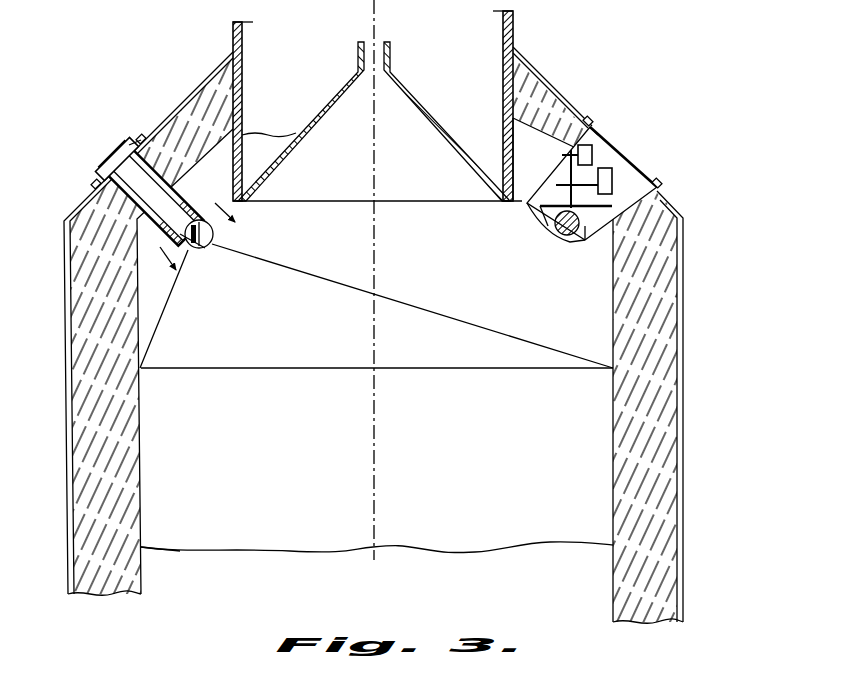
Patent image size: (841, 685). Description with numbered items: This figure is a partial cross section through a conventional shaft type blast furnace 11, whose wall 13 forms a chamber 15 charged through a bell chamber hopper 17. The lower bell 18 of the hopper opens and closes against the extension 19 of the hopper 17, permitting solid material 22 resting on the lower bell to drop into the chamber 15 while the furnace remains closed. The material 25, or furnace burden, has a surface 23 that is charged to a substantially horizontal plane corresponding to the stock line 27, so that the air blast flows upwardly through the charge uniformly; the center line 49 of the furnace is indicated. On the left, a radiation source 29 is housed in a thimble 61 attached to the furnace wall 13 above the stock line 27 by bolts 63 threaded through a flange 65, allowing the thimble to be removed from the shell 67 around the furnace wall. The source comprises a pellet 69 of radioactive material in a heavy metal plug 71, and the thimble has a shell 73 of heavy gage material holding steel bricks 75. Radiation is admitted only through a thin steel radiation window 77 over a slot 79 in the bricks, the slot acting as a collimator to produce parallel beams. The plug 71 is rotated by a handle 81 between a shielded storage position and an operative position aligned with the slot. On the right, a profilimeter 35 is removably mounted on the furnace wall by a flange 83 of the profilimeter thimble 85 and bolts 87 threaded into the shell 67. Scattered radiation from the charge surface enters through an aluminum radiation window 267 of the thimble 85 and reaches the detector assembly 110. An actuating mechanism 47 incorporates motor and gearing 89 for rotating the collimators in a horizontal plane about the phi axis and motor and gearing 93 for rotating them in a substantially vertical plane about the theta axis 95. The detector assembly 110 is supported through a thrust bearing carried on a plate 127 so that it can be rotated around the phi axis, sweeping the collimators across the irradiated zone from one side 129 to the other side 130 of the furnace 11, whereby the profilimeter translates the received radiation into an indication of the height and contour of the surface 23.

The blast furnace 11 is at (378, 335).
The furnace wall 13 is at (370, 335).
The furnace chamber 15 is at (592, 505).
The bell chamber hopper 17 is at (514, 40).
The lower bell 18 is at (430, 112).
The extension 19 is at (514, 184).
The solid material 22 is at (293, 134).
The surface 23 is at (514, 548).
The material 25 is at (240, 540).
The stock line 27 is at (554, 369).
The radiation source 29 is at (137, 198).
The profilimeter 35 is at (605, 185).
The actuating mechanism 47 is at (662, 190).
The central axis 49 is at (375, 466).
The thimble 61 is at (163, 246).
The bolts 63 is at (139, 136).
The flange 65 is at (143, 136).
The shell 67 is at (67, 416).
The pellet 69 is at (184, 240).
The heavy metal plug 71 is at (172, 222).
The shell 73 is at (180, 202).
The steel bricks 75 is at (208, 241).
The radiation window 77 is at (202, 252).
The slot 79 is at (190, 249).
The handle 81 is at (108, 158).
The flange 83 is at (590, 123).
The profilimeter thimble 85 is at (530, 210).
The bolts 87 is at (600, 127).
The motor and gearing 89 is at (620, 181).
The motor and gearing 93 is at (600, 163).
The theta axis 95 is at (571, 238).
The detector assembly 110 is at (547, 226).
The plate 127 is at (588, 230).
The one side 129 is at (141, 450).
The other side 130 is at (613, 430).
The radiation window 267 is at (553, 247).